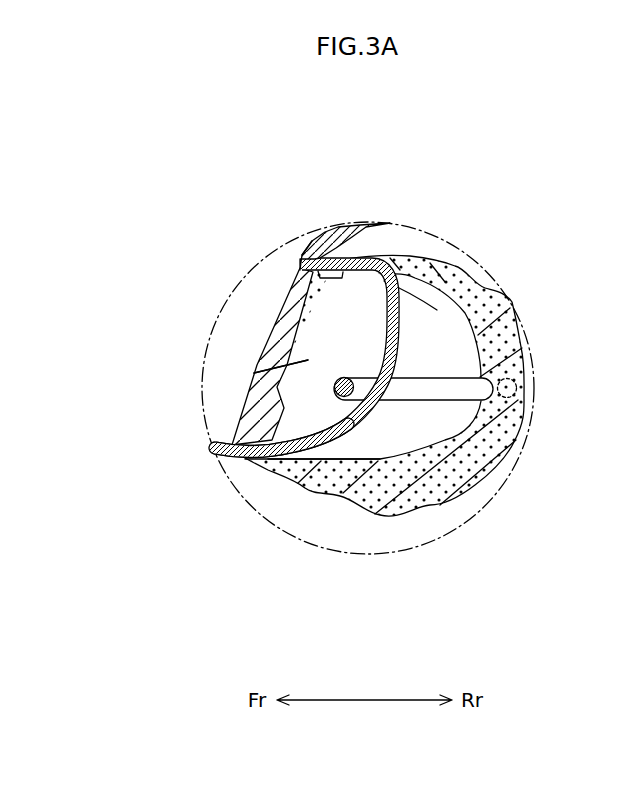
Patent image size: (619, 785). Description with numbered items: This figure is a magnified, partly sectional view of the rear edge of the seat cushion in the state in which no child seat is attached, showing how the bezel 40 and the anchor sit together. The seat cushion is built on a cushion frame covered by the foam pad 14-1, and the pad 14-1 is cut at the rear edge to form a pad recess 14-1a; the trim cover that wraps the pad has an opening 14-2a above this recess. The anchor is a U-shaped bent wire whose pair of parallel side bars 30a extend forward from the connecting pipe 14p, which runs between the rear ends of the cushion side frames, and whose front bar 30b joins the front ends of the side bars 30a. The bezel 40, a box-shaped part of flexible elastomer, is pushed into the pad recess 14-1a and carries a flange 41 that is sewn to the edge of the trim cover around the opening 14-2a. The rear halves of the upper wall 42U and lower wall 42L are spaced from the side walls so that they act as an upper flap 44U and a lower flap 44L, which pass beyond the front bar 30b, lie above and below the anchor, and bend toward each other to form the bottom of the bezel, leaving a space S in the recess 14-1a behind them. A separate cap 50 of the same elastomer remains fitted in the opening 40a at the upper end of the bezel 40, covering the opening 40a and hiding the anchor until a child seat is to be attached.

The bezel 40 is at (297, 214).
The flange 41 is at (310, 250).
The upper wall 42U is at (391, 223).
The lower wall 42L is at (244, 456).
The upper flap 44U is at (387, 283).
The lower flap 44L is at (340, 412).
The space S is at (437, 309).
The side bar 30a is at (433, 390).
The front bar 30b is at (336, 394).
The cap 50 is at (276, 318).
The opening 40a is at (207, 344).
The opening 14-2a is at (254, 373).
The connecting pipe 14p is at (502, 389).
The pad 14-1 is at (483, 461).
The pad recess 14-1a is at (415, 428).